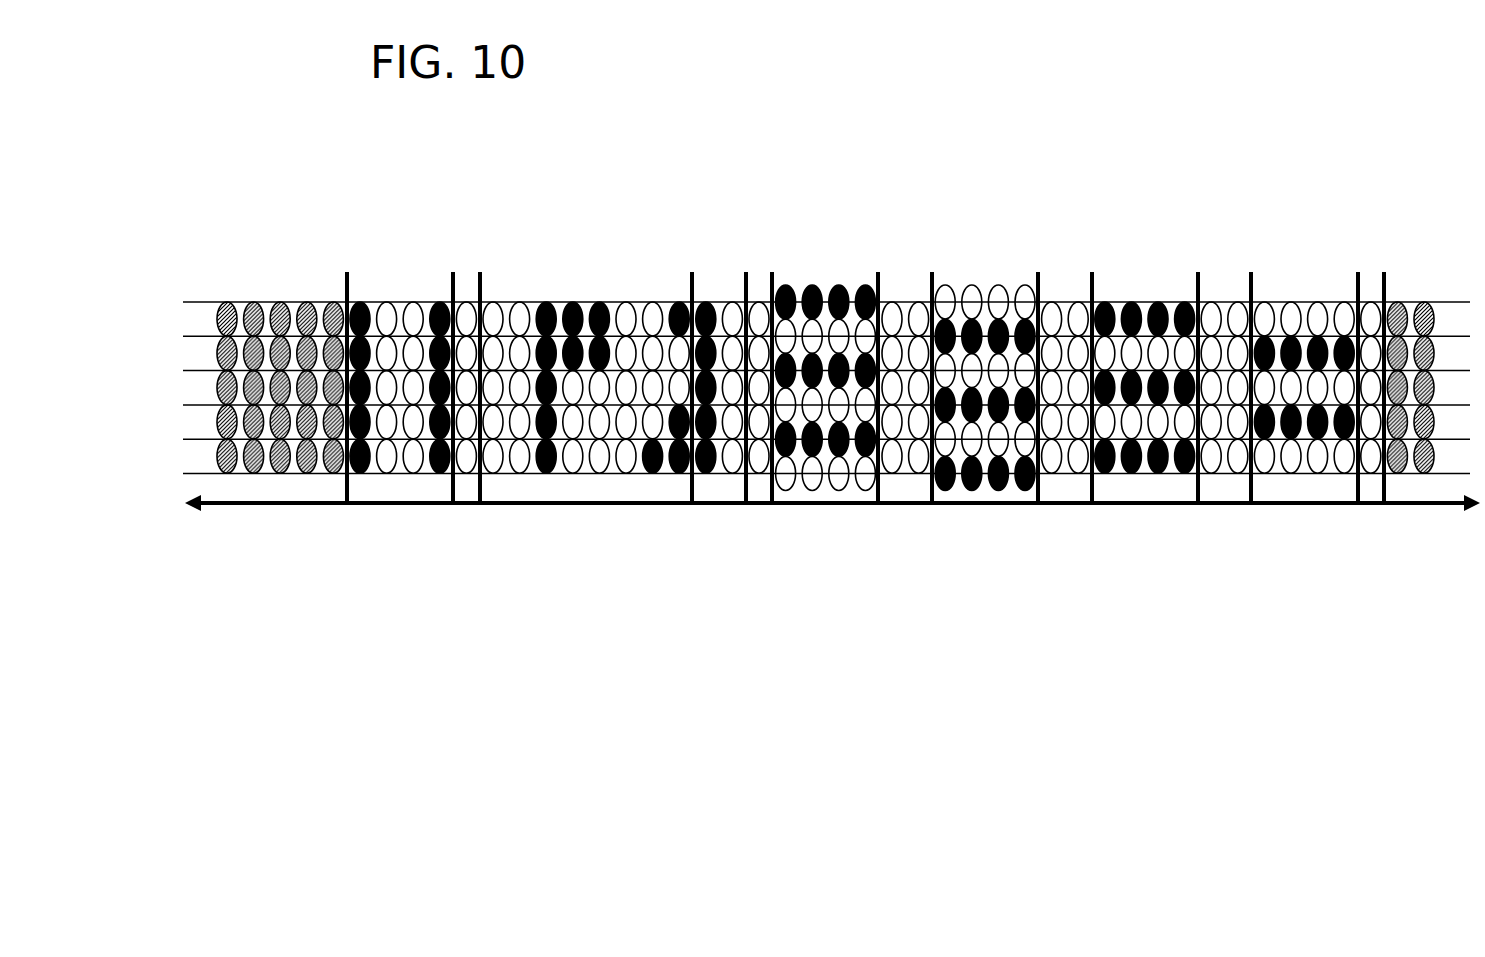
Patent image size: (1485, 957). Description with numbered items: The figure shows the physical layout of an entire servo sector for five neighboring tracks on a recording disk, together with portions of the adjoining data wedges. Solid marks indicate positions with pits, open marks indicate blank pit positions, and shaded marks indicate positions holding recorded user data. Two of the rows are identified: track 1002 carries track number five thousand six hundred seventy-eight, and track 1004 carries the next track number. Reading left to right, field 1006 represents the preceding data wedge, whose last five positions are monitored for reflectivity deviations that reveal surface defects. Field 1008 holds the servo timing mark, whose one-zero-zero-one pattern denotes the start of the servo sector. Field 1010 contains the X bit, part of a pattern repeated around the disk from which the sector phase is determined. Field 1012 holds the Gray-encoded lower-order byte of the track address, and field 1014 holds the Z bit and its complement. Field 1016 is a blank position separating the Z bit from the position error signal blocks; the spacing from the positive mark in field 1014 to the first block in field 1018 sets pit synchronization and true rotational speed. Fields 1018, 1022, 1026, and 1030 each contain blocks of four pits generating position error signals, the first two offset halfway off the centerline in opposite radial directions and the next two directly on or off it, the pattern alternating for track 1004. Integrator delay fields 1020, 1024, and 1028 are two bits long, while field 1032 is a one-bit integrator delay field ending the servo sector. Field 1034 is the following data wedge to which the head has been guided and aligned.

The track 1002 is at (184, 325).
The track 1004 is at (184, 361).
The field representing preceding data wedge 1006 is at (280, 458).
The servo timing mark field 1008 is at (400, 443).
The X bit field 1010 is at (466, 443).
The lower-order track address byte field 1012 is at (587, 443).
The Z bit field 1014 is at (719, 443).
The blank position field 1016 is at (773, 443).
The first position error signal block field 1018 is at (827, 443).
The integrator delay field 1020 is at (906, 443).
The second position error signal block field 1022 is at (986, 443).
The integrator delay field 1024 is at (1064, 443).
The third position error signal block field 1026 is at (1146, 443).
The integrator delay field 1028 is at (1225, 443).
The fourth position error signal block field 1030 is at (1306, 443).
The integrator delay field 1032 is at (1370, 443).
The field representing following data wedge 1034 is at (1426, 458).